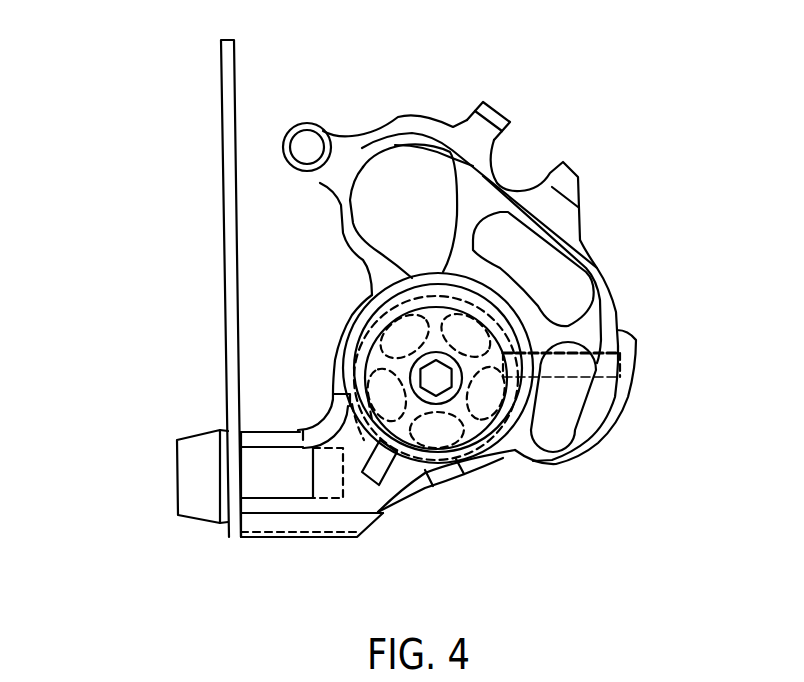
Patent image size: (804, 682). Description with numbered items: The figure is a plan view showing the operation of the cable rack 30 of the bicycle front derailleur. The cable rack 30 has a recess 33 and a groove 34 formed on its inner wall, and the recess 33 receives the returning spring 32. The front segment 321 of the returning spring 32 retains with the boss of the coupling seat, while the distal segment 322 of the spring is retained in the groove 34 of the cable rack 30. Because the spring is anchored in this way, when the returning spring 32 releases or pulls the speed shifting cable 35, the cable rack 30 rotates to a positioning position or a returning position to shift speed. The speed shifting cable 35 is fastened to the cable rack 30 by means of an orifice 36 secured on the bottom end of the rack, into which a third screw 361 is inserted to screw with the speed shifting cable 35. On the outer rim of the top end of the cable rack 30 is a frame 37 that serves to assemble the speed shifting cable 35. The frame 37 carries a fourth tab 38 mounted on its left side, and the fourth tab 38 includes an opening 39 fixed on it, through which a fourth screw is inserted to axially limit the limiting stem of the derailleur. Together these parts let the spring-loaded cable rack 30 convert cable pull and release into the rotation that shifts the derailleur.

The cable rack 30 is at (357, 308).
The returning spring 32 is at (510, 465).
The front segment 321 is at (577, 378).
The distal segment 322 is at (390, 516).
The recess 33 is at (345, 407).
The groove 34 is at (405, 470).
The speed shifting cable 35 is at (225, 233).
The orifice 36 is at (328, 503).
The third screw 361 is at (177, 476).
The frame 37 is at (597, 258).
The fourth tab 38 is at (325, 128).
The opening 39 is at (297, 130).